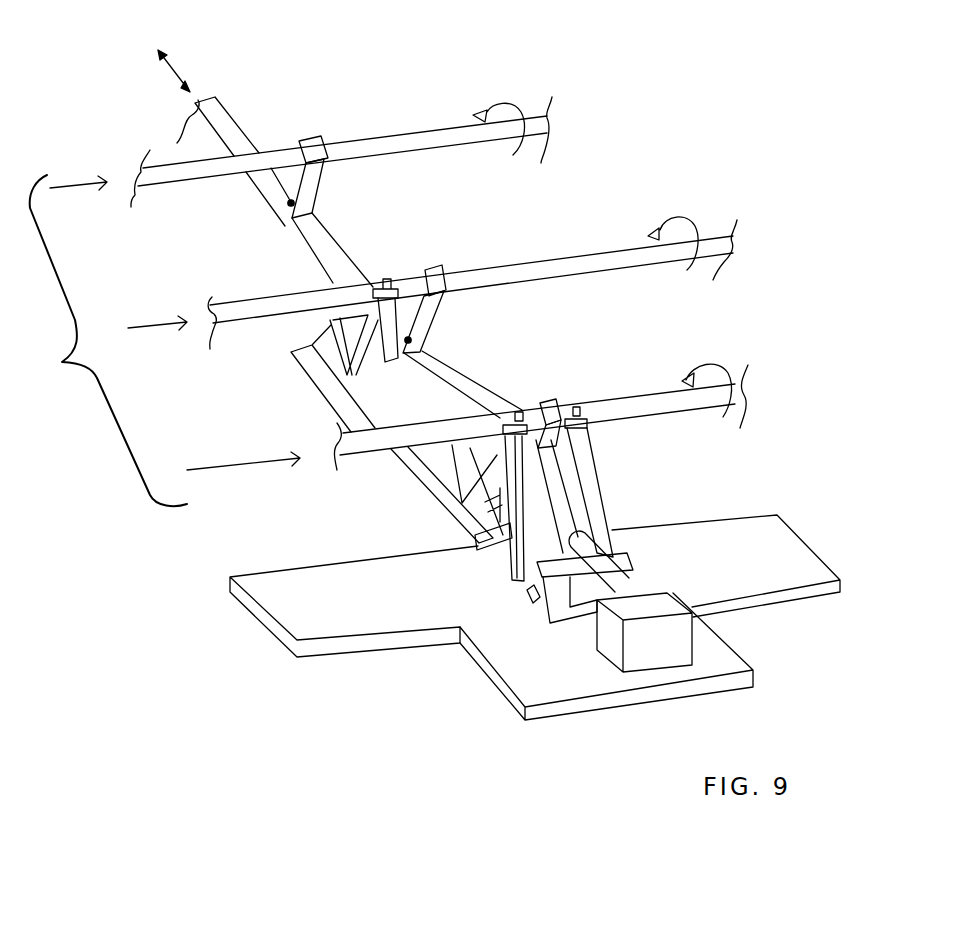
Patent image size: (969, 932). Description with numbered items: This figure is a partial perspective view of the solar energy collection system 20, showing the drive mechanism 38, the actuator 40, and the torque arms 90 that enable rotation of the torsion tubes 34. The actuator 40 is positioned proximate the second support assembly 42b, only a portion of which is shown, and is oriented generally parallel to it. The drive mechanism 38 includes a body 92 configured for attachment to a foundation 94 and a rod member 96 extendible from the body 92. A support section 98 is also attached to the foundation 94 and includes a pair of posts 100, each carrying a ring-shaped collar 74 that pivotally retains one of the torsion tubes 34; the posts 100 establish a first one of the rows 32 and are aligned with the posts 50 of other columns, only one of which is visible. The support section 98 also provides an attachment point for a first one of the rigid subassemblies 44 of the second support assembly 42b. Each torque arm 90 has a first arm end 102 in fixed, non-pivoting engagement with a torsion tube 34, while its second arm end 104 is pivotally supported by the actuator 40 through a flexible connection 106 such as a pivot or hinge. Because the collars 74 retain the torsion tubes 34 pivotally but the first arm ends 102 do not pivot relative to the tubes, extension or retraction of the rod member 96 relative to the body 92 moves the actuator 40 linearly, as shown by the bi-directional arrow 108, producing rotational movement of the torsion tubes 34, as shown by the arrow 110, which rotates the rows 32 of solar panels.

The solar energy collection system 20 is at (187, 787).
The rows 32 is at (165, 340).
The torsion tubes 34 is at (405, 133).
The drive mechanism 38 is at (693, 657).
The actuator 40 is at (232, 112).
The second support assembly 42b is at (291, 352).
The rigid subassemblies 44 is at (510, 538).
The posts 50 is at (357, 312).
The ring-shaped collar 74 is at (386, 279).
The torque arms 90 is at (275, 172).
The body 92 is at (608, 652).
The foundation 94 is at (235, 577).
The rod member 96 is at (627, 567).
The support section 98 is at (510, 545).
The posts 100 is at (490, 542).
The first arm end 102 is at (300, 139).
The second arm end 104 is at (312, 210).
The flexible connection 106 is at (288, 216).
The bi-directional arrow 108 is at (177, 78).
The arrow 110 is at (505, 105).